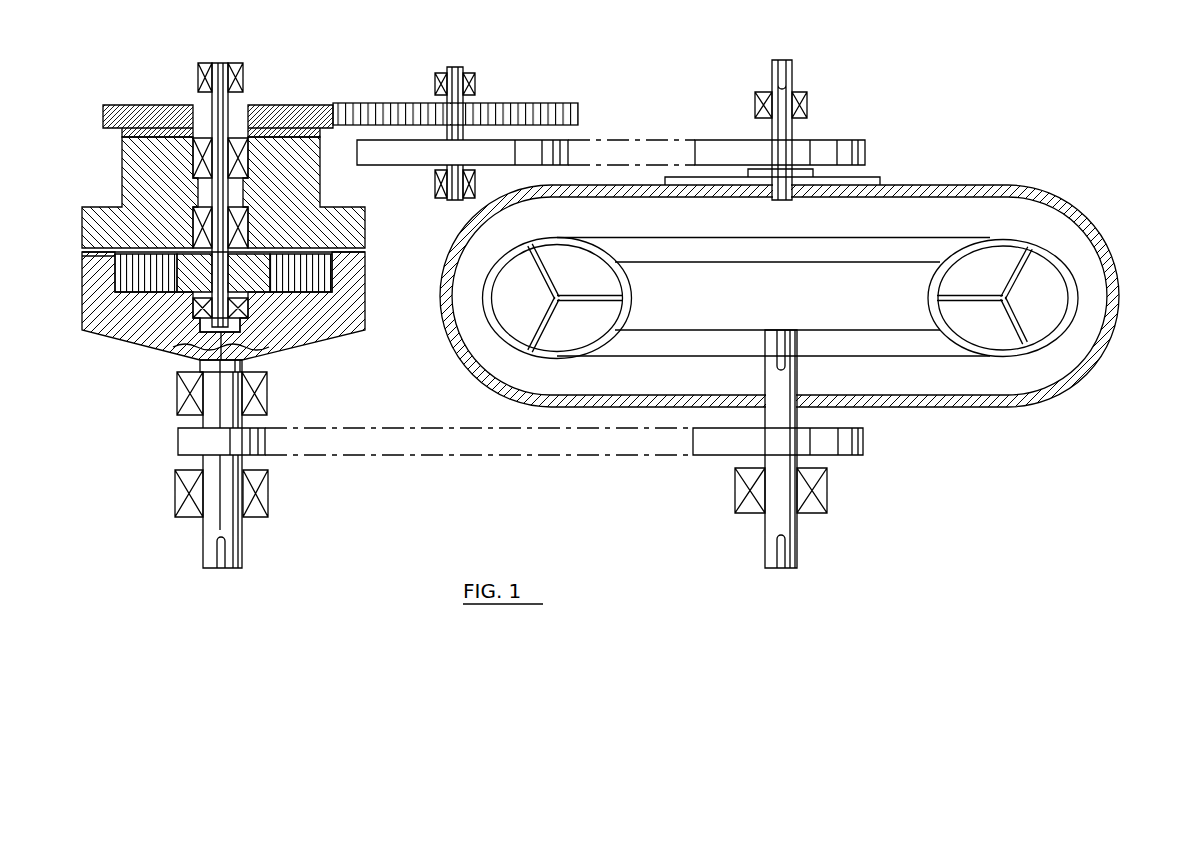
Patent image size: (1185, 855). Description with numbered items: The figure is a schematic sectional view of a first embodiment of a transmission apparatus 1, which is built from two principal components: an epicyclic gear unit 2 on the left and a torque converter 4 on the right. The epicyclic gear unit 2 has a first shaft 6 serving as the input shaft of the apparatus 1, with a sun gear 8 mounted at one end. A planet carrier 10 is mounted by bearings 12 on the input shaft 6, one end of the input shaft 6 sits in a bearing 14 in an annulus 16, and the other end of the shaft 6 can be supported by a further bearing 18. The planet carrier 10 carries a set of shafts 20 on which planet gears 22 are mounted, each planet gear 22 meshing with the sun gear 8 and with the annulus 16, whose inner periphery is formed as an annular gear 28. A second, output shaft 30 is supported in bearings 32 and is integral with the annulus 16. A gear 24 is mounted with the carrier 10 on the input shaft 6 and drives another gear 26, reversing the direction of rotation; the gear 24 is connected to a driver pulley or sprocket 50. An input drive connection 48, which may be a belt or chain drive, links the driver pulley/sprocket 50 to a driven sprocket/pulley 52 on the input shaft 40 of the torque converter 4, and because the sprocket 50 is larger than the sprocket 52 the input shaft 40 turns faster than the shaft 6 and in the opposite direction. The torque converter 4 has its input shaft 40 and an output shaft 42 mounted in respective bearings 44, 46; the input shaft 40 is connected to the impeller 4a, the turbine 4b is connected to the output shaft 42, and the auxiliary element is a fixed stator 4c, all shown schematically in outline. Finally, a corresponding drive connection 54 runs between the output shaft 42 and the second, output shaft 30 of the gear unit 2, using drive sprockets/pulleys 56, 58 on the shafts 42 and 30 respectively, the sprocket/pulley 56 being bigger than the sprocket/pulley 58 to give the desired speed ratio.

The transmission apparatus 1 is at (394, 464).
The epicyclic gear unit 2 is at (160, 380).
The torque converter 4 is at (911, 415).
The impeller 4a is at (988, 257).
The turbine 4b is at (989, 346).
The stator 4c is at (1044, 322).
The first shaft 6 is at (231, 68).
The sun gear 8 is at (181, 286).
The planet carrier 10 is at (359, 228).
The bearings 12 is at (245, 156).
The bearing 14 is at (249, 313).
The annulus 16 is at (143, 336).
The further bearing 18 is at (243, 84).
The shafts 20 is at (144, 293).
The planet gears 22 is at (324, 270).
The gear 24 is at (146, 116).
The gear 26 is at (505, 111).
The annular gear 28 is at (86, 256).
The second, output shaft 30 is at (214, 413).
The bearings 32 is at (266, 400).
The input shaft 40 is at (791, 72).
The output shaft 42 is at (781, 419).
The bearing 44 is at (808, 105).
The bearing 46 is at (823, 491).
The input drive connection 48 is at (531, 153).
The pulley or sprocket 50 is at (419, 158).
The driven sprocket/pulley 52 is at (783, 133).
The drive connection 54 is at (496, 456).
The drive sprocket/pulley 56 is at (728, 453).
The drive sprocket/pulley 58 is at (184, 451).